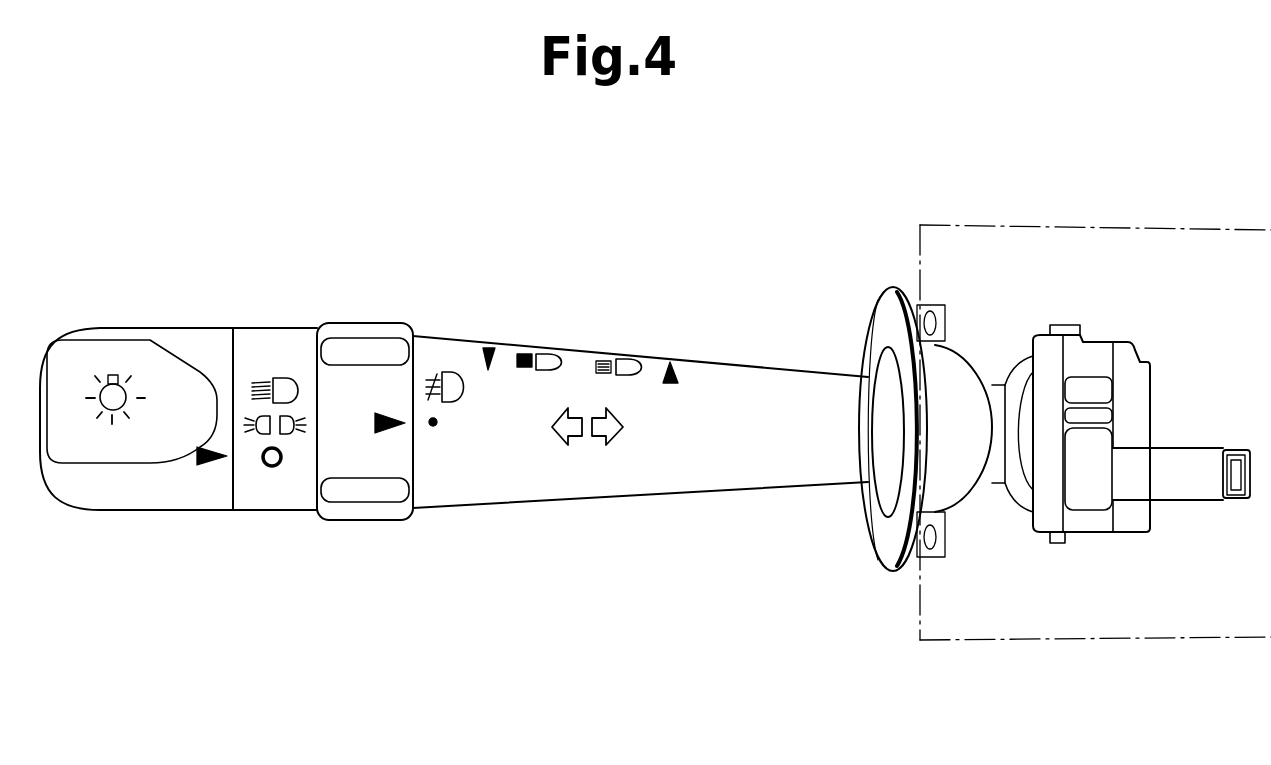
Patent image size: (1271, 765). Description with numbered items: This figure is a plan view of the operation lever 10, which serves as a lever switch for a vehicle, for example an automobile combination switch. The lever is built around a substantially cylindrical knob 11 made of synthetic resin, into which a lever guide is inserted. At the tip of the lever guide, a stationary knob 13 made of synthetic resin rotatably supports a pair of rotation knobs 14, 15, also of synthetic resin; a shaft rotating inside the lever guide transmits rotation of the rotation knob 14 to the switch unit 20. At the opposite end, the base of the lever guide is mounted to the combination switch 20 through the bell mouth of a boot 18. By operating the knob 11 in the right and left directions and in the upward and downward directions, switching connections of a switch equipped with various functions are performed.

The operation lever 10 is at (454, 447).
The knob 11 is at (715, 385).
The stationary knob 13 is at (272, 337).
The rotation knob 14 is at (136, 330).
The rotation knob 15 is at (370, 335).
The boot 18 is at (883, 328).
The switch unit 20 is at (1065, 224).